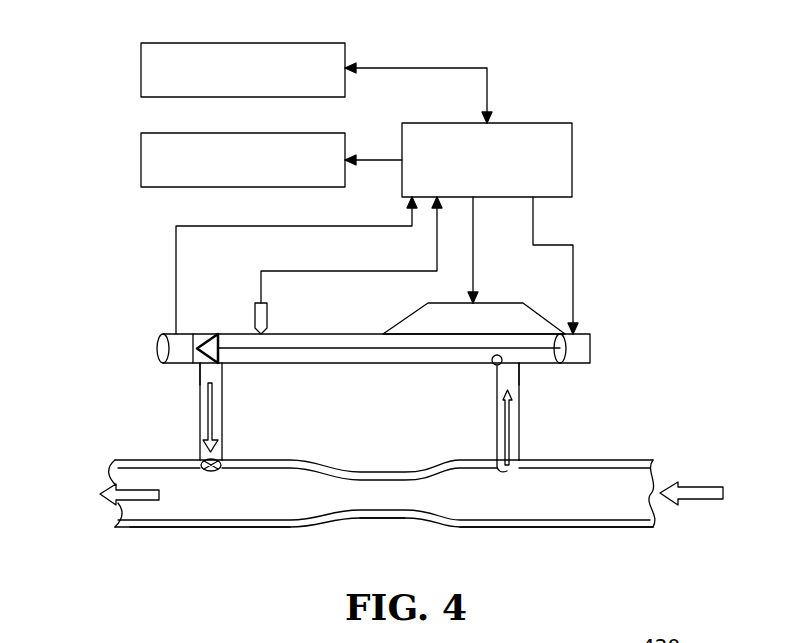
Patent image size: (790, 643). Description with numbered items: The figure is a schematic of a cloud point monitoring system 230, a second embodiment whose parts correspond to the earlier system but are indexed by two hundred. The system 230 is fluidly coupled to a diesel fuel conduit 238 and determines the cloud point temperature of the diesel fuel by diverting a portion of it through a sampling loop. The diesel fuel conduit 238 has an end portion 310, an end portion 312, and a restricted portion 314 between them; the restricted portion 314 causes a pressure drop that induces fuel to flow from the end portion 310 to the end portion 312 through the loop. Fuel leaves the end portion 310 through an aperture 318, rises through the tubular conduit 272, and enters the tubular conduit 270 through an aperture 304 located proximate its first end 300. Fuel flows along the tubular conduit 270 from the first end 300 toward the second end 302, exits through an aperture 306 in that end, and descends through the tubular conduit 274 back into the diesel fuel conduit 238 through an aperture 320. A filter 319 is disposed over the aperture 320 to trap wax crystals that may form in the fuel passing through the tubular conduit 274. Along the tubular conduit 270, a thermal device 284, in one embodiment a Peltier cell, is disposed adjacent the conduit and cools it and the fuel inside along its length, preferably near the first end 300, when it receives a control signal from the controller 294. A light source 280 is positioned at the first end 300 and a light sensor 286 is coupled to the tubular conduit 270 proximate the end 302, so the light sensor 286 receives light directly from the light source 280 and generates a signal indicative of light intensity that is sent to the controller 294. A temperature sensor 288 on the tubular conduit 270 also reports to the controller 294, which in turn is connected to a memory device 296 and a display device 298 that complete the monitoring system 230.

The cloud point monitoring system 230 is at (607, 66).
The diesel fuel conduit 238 is at (627, 452).
The tubular conduit 270 is at (296, 325).
The tubular conduit 272 is at (530, 412).
The tubular conduit 274 is at (190, 393).
The light source 280 is at (593, 348).
The thermal device 284 is at (497, 302).
The light sensor 286 is at (157, 345).
The temperature sensor 288 is at (255, 315).
The controller 294 is at (572, 160).
The memory device 296 is at (141, 67).
The display device 298 is at (141, 157).
The first end 300 is at (553, 366).
The second end 302 is at (197, 372).
The aperture 304 is at (493, 364).
The aperture 306 is at (222, 360).
The end portion 310 is at (610, 528).
The end portion 312 is at (217, 530).
The restricted portion 314 is at (375, 520).
The aperture 318 is at (510, 470).
The filter 319 is at (215, 472).
The aperture 320 is at (208, 474).